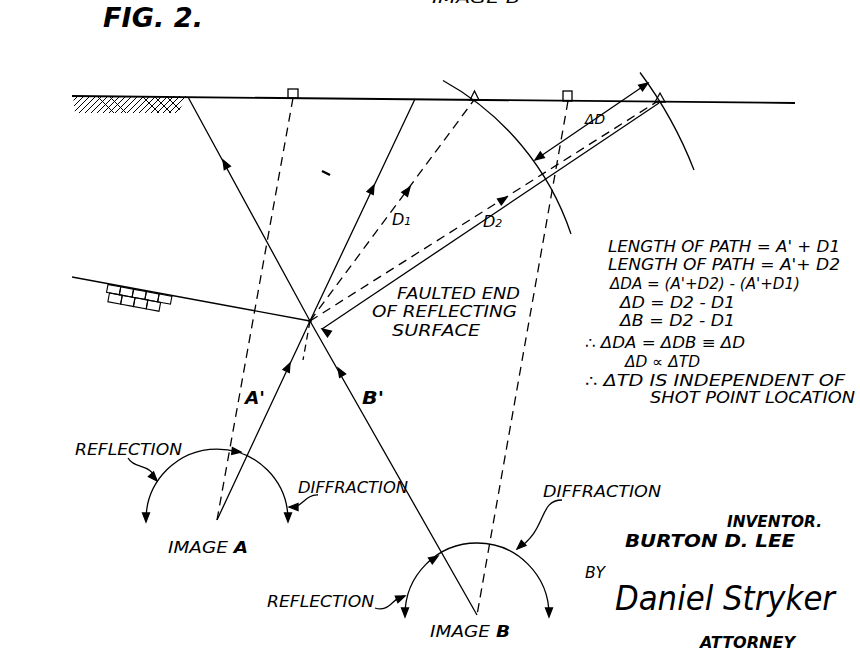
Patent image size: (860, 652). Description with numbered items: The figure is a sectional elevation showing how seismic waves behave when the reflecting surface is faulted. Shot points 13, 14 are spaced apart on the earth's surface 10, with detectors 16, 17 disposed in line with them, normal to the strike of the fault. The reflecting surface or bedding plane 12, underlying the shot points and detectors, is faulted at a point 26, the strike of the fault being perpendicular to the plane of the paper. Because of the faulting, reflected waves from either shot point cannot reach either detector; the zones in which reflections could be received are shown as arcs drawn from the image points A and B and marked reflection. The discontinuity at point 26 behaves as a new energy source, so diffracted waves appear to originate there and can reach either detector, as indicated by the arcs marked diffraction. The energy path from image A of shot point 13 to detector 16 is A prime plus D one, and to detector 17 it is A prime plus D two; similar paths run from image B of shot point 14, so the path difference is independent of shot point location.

The earth's surface 10 is at (195, 78).
The reflecting surface 12 is at (225, 308).
The shot point 13 is at (305, 63).
The shot point 14 is at (590, 63).
The detector 16 is at (482, 60).
The detector 17 is at (665, 92).
The point of discontinuity 26 is at (306, 352).